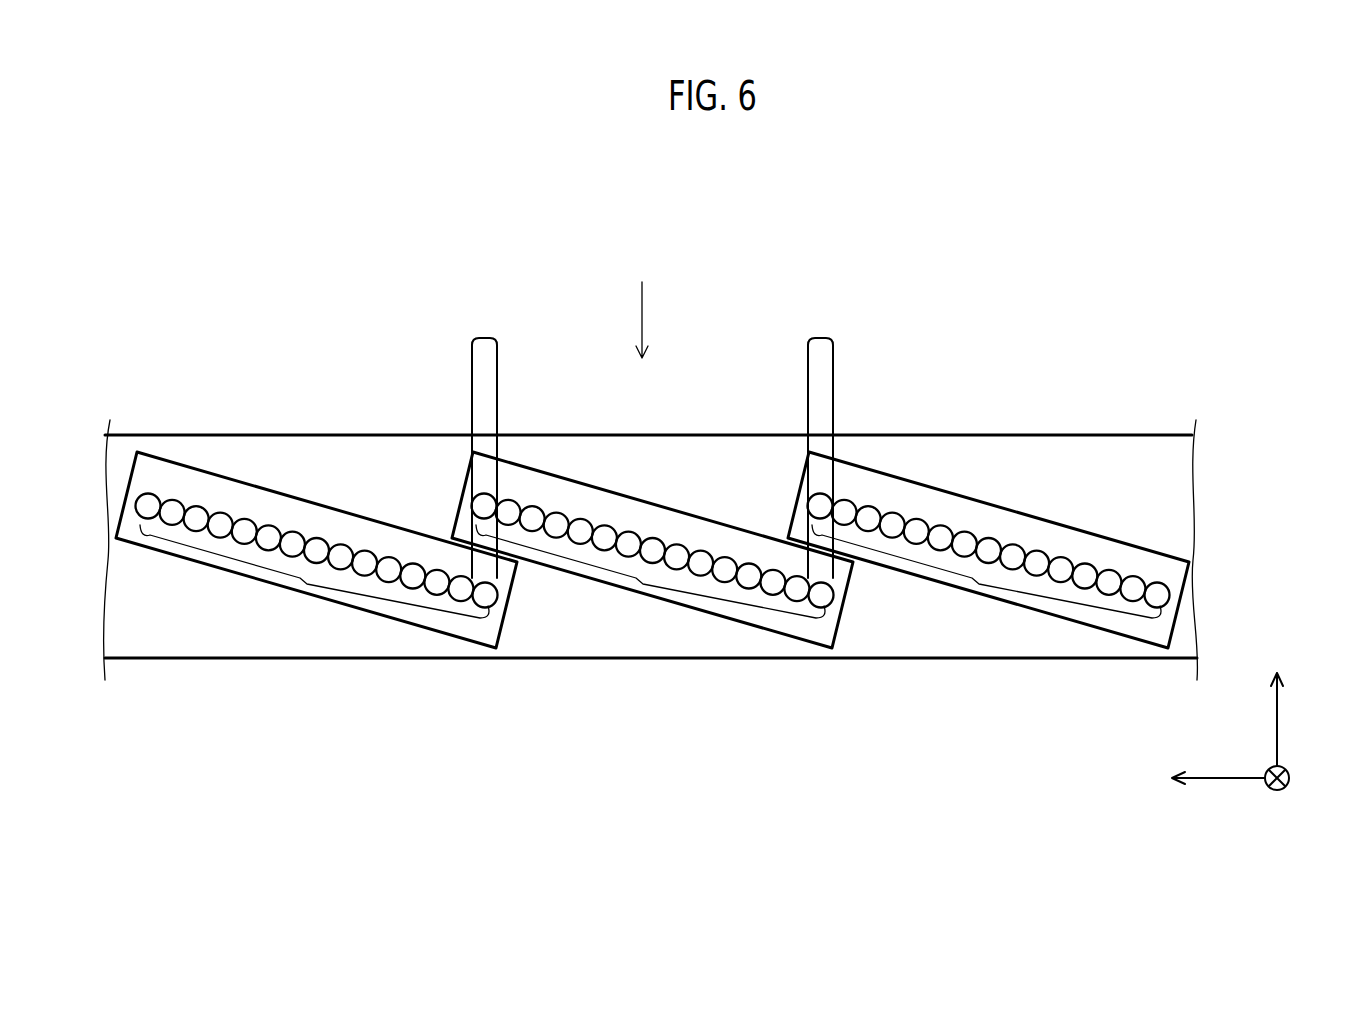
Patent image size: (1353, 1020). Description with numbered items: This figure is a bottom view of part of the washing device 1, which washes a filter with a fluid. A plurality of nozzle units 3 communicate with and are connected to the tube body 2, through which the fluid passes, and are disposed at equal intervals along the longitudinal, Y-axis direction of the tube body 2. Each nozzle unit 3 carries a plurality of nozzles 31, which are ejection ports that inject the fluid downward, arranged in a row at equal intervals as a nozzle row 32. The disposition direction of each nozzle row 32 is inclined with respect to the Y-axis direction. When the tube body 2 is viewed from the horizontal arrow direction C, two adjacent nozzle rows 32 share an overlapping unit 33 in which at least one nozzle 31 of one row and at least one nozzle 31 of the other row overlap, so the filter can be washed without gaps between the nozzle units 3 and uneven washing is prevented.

The washing device 1 is at (1195, 343).
The tube body 2 is at (1122, 435).
The nozzle unit 3 is at (254, 471).
The nozzle 31 is at (365, 562).
The nozzle row 32 is at (305, 585).
The overlapping unit 33 is at (484, 337).